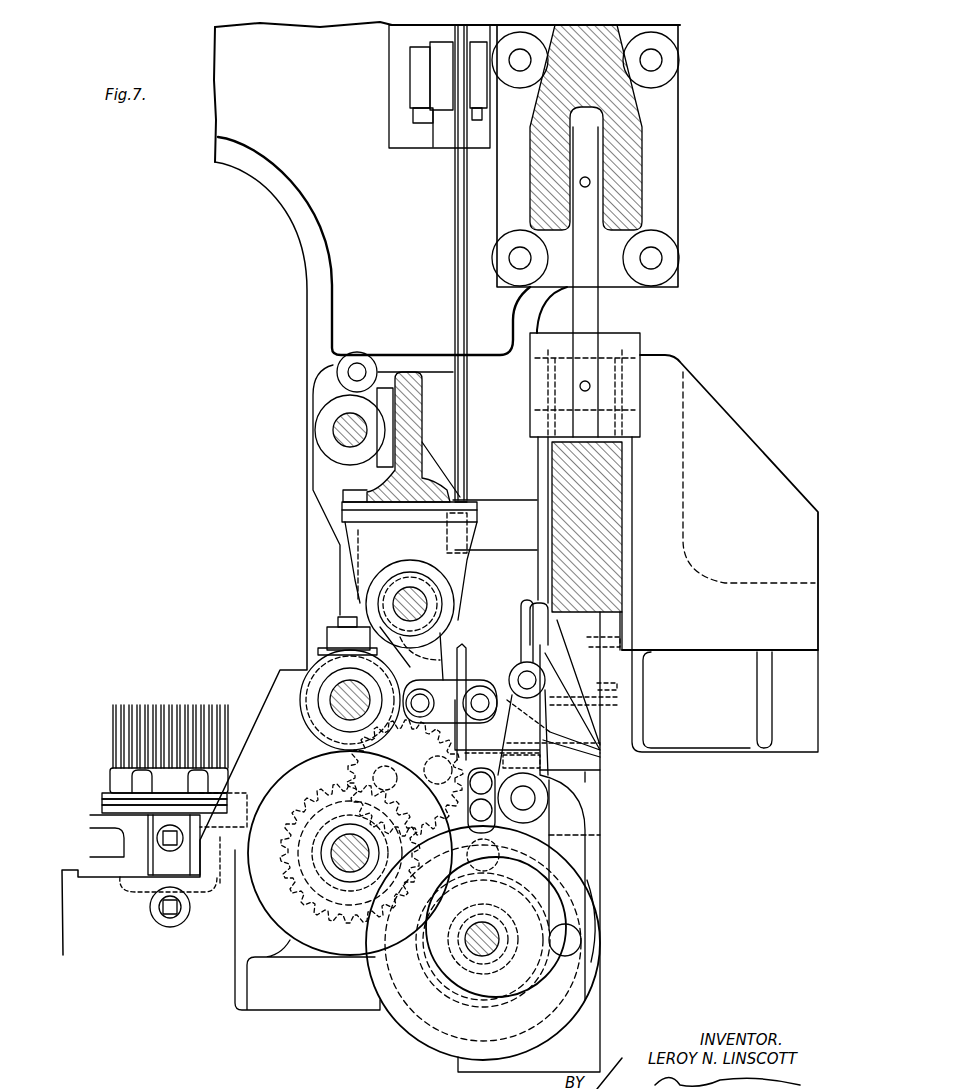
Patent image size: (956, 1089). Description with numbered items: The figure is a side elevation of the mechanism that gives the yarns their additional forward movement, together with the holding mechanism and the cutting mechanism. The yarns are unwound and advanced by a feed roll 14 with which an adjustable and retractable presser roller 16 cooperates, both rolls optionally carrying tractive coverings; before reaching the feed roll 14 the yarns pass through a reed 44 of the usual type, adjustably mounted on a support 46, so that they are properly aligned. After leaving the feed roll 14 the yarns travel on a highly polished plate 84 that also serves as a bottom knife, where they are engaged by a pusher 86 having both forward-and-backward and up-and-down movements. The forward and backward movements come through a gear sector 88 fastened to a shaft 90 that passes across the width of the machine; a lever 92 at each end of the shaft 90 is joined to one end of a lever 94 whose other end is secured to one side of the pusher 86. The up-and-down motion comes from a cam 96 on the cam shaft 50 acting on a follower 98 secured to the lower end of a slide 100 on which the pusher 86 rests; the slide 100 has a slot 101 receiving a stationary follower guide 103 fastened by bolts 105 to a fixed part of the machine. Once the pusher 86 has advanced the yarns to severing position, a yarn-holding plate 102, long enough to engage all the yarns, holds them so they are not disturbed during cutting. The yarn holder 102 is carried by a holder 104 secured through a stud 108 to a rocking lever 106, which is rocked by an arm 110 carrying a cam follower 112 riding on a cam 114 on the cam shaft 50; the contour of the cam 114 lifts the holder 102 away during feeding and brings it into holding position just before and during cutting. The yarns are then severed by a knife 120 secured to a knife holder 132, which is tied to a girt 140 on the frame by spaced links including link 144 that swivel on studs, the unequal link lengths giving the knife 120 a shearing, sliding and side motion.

The feed roll 14 is at (263, 806).
The presser roll 16 is at (307, 672).
The reed 44 is at (158, 706).
The support 46 is at (133, 828).
The cam shaft 50 is at (478, 955).
The plate 84 is at (529, 912).
The pusher 86 is at (462, 672).
The gear sector 88 is at (405, 778).
The shaft 90 is at (415, 588).
The lever 92 is at (440, 663).
The lever 94 is at (478, 688).
The cam 96 is at (432, 890).
The follower 98 is at (500, 849).
The slide 100 is at (483, 766).
The slot 101 is at (547, 815).
The yarn-holding plate 102 is at (603, 752).
The follower guide 103 is at (521, 761).
The holder 104 is at (528, 617).
The bolts 105 is at (470, 812).
The rocking lever 106 is at (544, 764).
The stud 108 is at (524, 672).
The arm 110 is at (583, 840).
The cam follower 112 is at (582, 940).
The cam 114 is at (565, 908).
The knife 120 is at (613, 713).
The knife holder 132 is at (617, 533).
The girt 140 is at (637, 166).
The link 144 is at (598, 322).